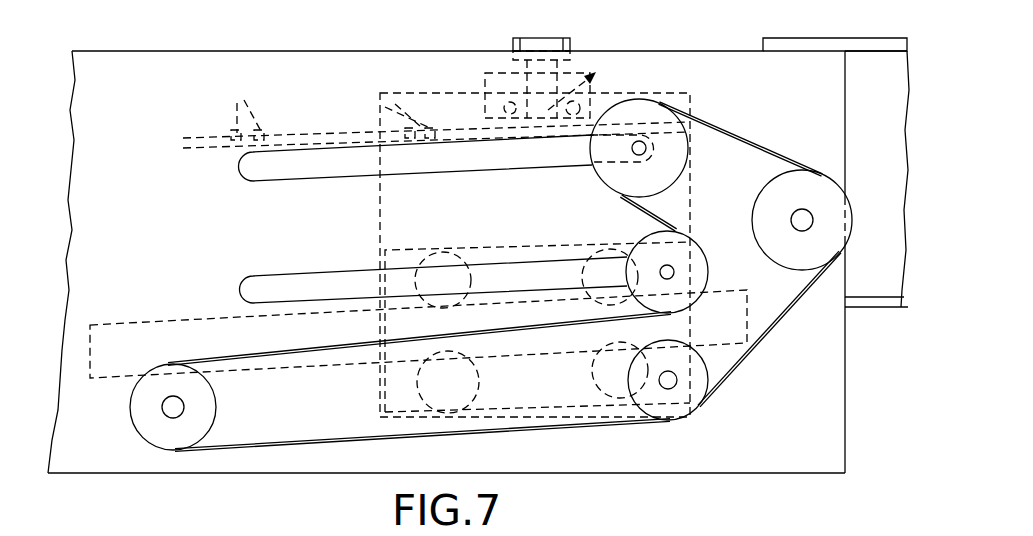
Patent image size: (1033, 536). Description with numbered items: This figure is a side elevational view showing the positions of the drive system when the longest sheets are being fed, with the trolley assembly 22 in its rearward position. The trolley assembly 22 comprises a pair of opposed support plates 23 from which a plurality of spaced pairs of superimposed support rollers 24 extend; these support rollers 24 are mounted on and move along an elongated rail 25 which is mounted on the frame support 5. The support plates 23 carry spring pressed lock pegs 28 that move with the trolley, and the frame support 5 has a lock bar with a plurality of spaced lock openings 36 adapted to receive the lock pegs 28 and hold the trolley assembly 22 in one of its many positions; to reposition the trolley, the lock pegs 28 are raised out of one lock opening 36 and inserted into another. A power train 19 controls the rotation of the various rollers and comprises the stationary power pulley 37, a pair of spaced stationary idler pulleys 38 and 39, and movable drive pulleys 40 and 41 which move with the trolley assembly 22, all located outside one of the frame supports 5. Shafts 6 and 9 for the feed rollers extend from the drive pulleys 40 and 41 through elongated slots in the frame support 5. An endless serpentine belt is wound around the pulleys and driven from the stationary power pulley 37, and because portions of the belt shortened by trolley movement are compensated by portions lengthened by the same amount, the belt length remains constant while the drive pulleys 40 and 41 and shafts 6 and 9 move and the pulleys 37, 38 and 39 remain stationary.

The frame support 5 is at (727, 458).
The shaft 6 is at (646, 148).
The shaft 9 is at (674, 274).
The power train 19 is at (745, 112).
The trolley assembly 22 is at (410, 68).
The support plate 23 is at (378, 205).
The support roller 24 is at (460, 256).
The elongated rail 25 is at (745, 324).
The lock peg 28 is at (536, 49).
The lock opening 36 is at (240, 100).
The stationary power pulley 37 is at (826, 200).
The stationary idler pulley 38 is at (705, 398).
The stationary idler pulley 39 is at (205, 408).
The drive pulley 40 is at (641, 110).
The drive pulley 41 is at (692, 252).